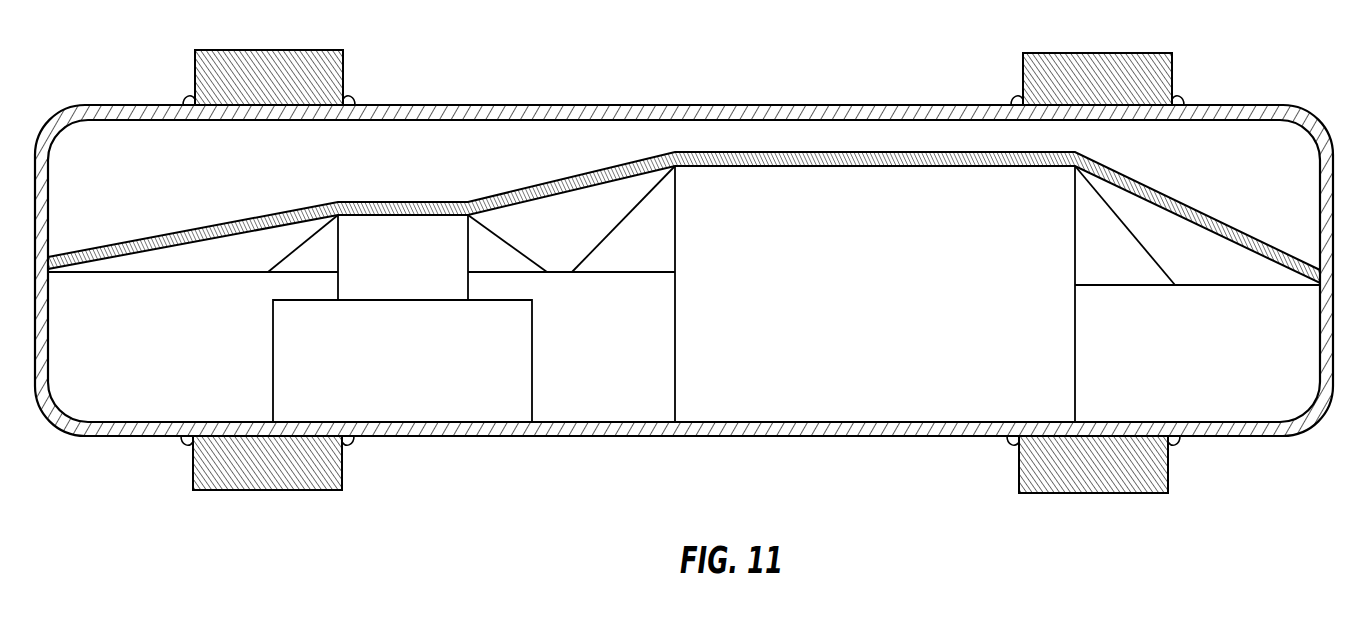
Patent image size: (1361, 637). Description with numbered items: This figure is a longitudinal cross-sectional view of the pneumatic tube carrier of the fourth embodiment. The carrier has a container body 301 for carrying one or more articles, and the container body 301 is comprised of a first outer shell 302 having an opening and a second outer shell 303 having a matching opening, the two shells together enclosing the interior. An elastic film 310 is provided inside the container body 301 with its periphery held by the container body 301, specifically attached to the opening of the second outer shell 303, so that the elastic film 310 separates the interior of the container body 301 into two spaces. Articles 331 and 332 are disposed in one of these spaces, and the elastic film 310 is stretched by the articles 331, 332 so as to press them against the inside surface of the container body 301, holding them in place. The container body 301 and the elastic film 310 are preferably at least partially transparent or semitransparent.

The container body 301 is at (684, 246).
The first outer shell 302 is at (817, 462).
The second outer shell 303 is at (806, 81).
The elastic film 310 is at (684, 207).
The article 331 is at (407, 393).
The article 332 is at (875, 327).